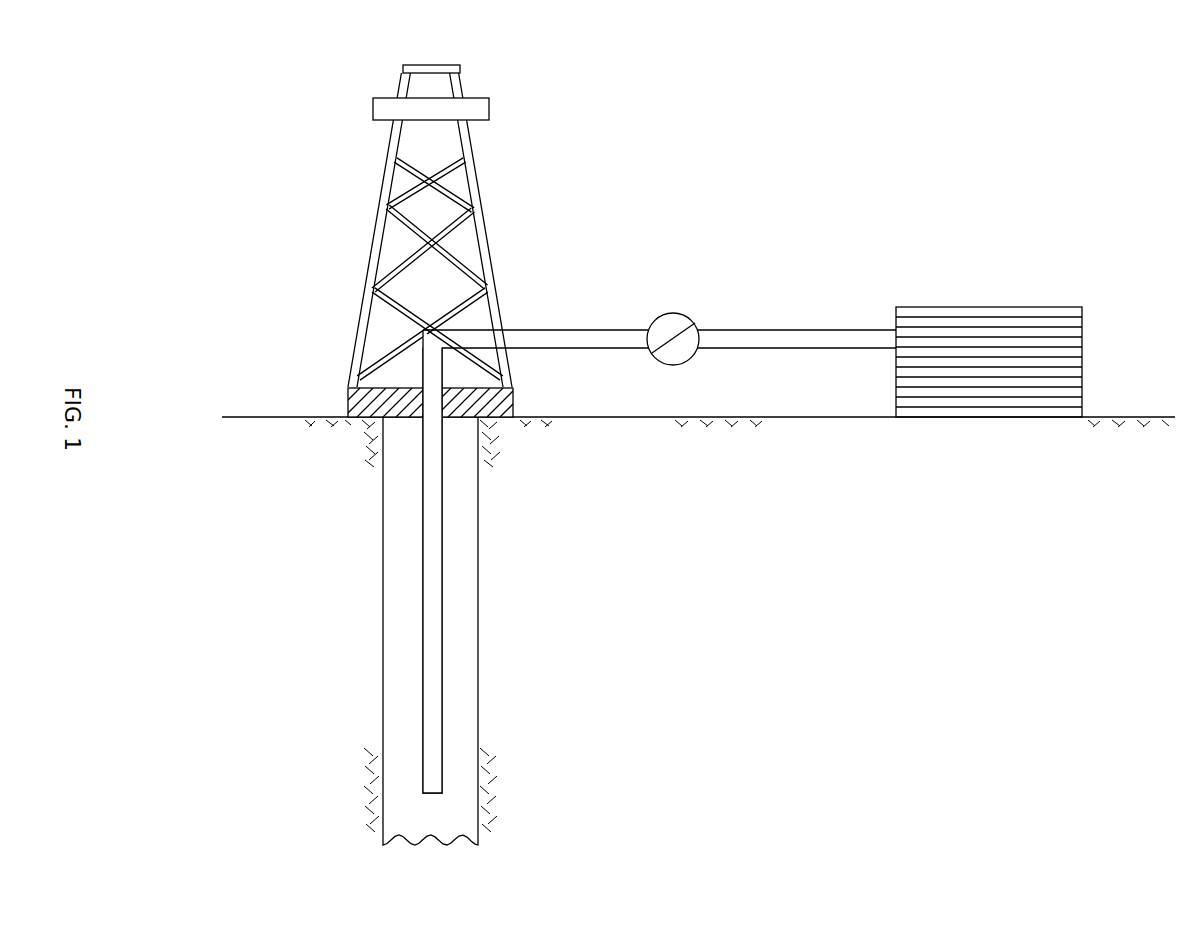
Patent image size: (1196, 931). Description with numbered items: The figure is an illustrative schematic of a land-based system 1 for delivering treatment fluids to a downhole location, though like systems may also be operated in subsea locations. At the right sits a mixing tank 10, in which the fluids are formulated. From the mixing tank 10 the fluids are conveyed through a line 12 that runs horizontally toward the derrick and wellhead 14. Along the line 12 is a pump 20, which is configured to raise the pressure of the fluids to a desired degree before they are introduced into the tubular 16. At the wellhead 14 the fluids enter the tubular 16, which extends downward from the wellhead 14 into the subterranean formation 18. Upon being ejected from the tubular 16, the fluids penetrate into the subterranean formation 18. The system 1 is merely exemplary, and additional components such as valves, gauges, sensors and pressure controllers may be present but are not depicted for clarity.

The system 1 is at (228, 107).
The mixing tank 10 is at (1067, 307).
The line 12 is at (575, 328).
The wellhead 14 is at (348, 400).
The tubular 16 is at (442, 545).
The subterranean formation 18 is at (302, 645).
The pump 20 is at (687, 308).